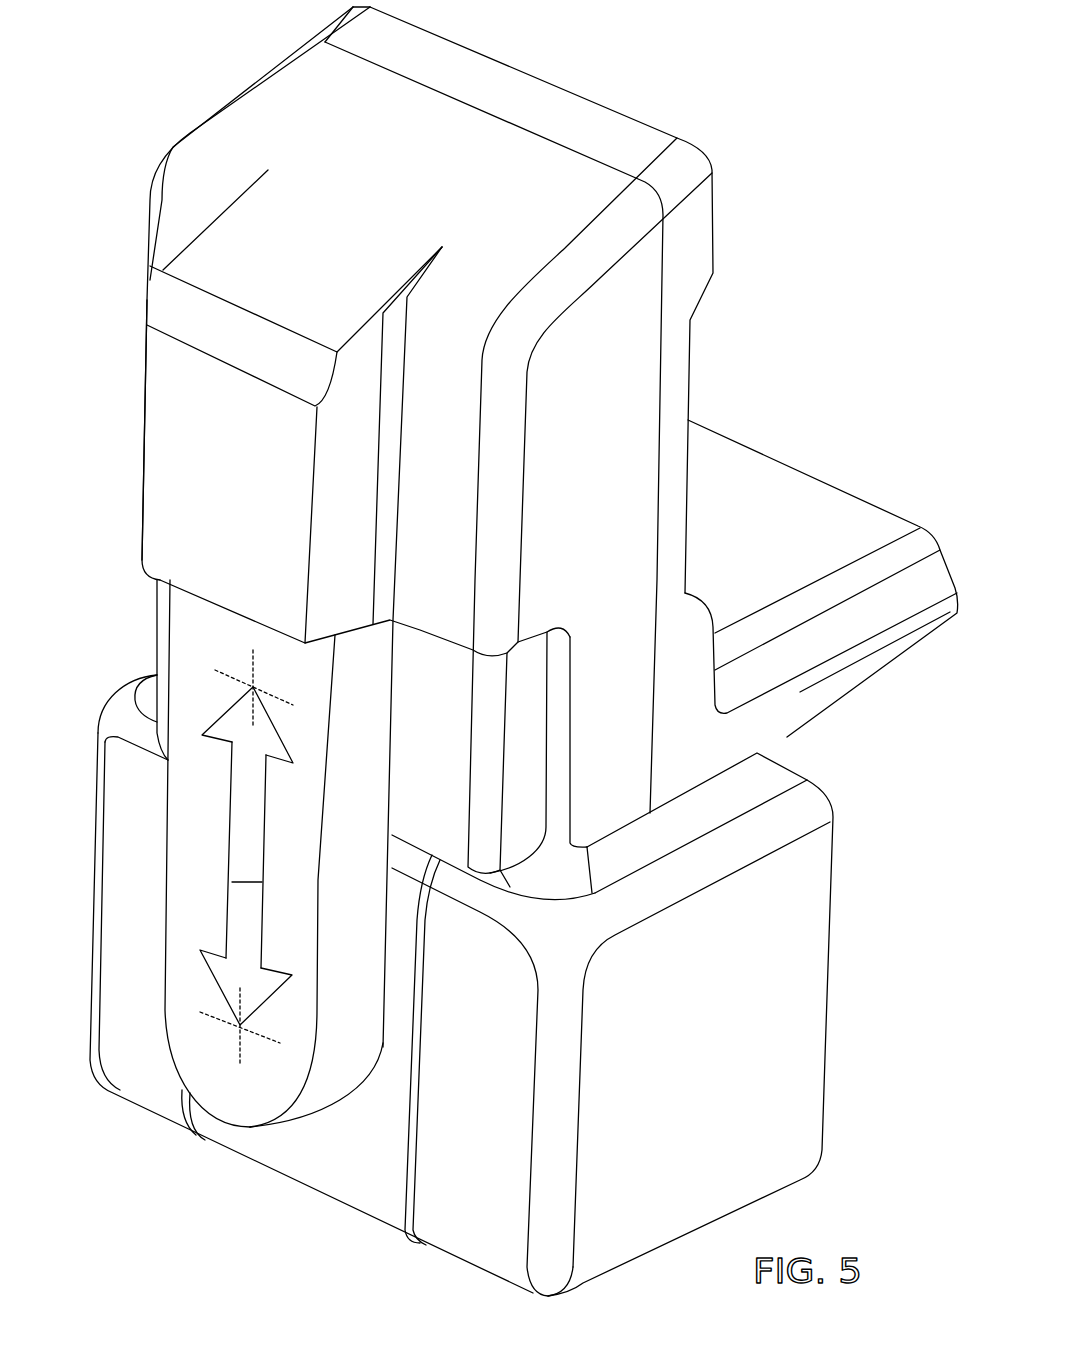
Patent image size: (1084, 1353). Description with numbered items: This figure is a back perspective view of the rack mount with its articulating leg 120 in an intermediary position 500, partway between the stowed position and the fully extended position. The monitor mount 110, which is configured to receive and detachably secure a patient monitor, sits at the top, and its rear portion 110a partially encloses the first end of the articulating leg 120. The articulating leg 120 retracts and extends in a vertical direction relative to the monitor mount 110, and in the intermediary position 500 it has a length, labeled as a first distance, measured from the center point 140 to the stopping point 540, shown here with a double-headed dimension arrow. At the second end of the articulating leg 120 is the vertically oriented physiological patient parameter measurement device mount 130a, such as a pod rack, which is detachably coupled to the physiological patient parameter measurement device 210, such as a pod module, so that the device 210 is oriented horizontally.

The intermediary position 500 is at (832, 78).
The monitor mount 110 is at (538, 77).
The rear portion of the monitor mount 110a is at (152, 473).
The articulating leg 120 is at (210, 1087).
The vertically oriented physiological patient parameter measurement device mount 130a is at (363, 1198).
The center point 140 is at (253, 687).
The stopping point 540 is at (237, 1023).
The physiological patient parameter measurement device 210 is at (813, 1020).